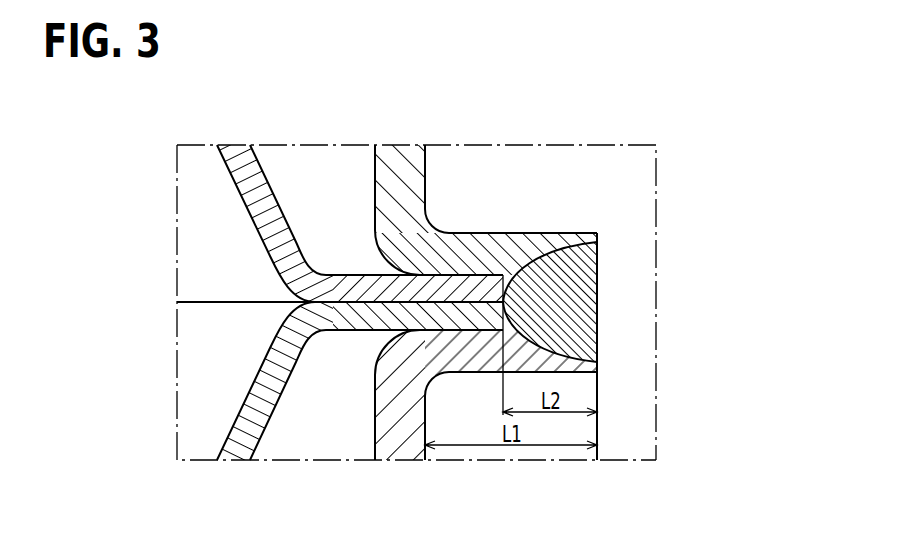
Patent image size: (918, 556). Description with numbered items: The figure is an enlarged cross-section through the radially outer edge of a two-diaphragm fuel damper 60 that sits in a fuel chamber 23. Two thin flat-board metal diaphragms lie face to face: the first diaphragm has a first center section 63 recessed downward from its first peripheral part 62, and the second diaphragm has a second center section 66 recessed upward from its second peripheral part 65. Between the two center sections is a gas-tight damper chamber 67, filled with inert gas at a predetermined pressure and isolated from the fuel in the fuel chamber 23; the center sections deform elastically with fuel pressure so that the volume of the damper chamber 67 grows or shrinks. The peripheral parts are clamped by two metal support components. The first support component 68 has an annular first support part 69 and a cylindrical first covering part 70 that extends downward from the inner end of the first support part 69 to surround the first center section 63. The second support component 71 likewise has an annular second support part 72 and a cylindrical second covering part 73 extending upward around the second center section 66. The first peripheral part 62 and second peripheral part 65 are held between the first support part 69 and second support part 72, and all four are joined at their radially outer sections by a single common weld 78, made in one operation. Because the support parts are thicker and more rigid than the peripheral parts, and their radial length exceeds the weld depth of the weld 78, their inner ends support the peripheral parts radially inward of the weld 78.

The fuel chamber 23 is at (328, 177).
The nozzle body 60 is at (612, 242).
The first peripheral part 62 is at (423, 420).
The first center section 63 is at (267, 417).
The second peripheral part 65 is at (467, 287).
The second center section 66 is at (259, 172).
The damper chamber 67 is at (212, 215).
The first support component 68 is at (363, 410).
The first support part 69 is at (573, 373).
The first covering part 70 is at (403, 432).
The second support component 71 is at (437, 173).
The second support part 72 is at (540, 243).
The second covering part 73 is at (400, 158).
The weld 78 is at (575, 303).